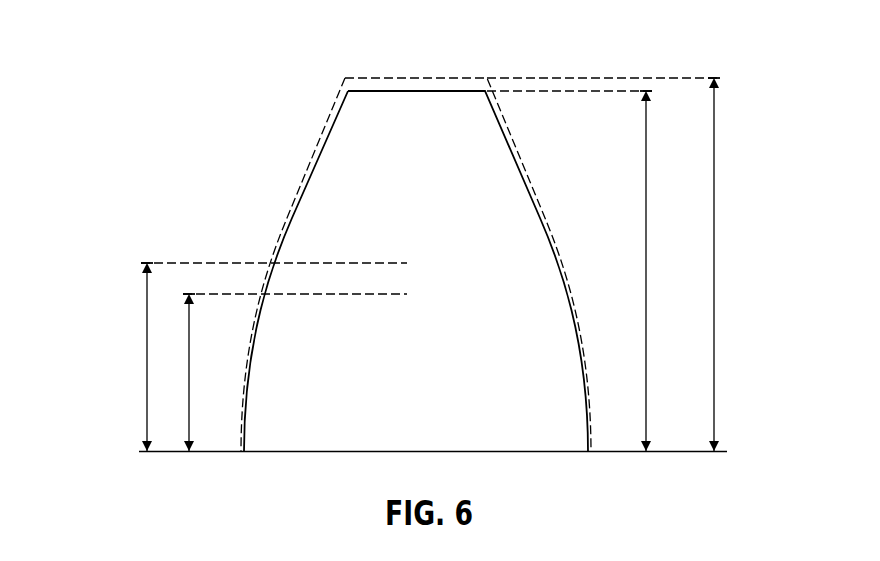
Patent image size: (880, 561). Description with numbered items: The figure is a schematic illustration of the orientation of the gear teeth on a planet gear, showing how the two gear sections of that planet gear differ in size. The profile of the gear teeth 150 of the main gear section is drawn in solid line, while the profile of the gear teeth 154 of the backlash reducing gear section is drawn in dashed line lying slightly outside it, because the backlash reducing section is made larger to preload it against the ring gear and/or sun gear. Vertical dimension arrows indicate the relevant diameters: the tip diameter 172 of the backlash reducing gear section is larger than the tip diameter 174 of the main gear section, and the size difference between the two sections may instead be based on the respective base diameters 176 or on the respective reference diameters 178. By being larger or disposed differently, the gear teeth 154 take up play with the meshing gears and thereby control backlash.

The gear teeth 150 is at (380, 178).
The gear teeth 154 is at (428, 77).
The tip diameter 172 is at (714, 265).
The tip diameter 174 is at (646, 193).
The base diameter 176 is at (189, 349).
The reference diameter 178 is at (147, 401).